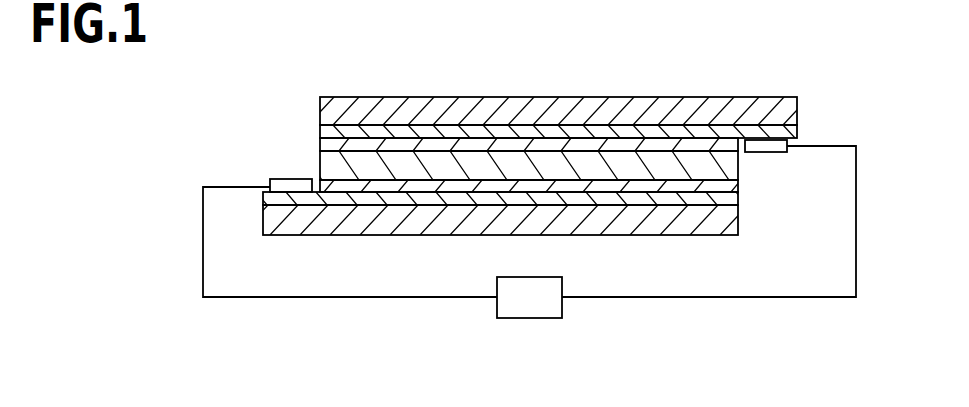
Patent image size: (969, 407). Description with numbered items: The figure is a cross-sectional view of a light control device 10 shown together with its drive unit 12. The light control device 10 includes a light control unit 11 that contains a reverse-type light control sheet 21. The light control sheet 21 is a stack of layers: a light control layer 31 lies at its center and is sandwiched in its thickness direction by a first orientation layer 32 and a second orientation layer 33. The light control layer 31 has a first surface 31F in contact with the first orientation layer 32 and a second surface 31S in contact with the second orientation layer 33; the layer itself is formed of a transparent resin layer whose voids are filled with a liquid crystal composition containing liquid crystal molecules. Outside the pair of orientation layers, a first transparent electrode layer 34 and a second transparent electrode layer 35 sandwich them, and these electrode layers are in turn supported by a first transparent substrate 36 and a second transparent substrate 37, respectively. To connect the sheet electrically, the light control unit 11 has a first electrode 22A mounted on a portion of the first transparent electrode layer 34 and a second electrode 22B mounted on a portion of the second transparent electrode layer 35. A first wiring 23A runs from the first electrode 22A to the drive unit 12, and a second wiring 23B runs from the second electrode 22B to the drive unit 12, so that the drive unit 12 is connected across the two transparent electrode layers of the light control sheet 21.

The light control device 10 is at (826, 85).
The light control unit 11 is at (190, 253).
The drive unit 12 is at (563, 303).
The light control sheet 21 is at (192, 97).
The first electrode 22A is at (293, 180).
The second electrode 22B is at (773, 153).
The first wiring 23A is at (351, 298).
The second wiring 23B is at (729, 298).
The light control layer 31 is at (739, 168).
The second surface 31S is at (672, 166).
The first surface 31F is at (411, 172).
The first orientation layer 32 is at (739, 190).
The second orientation layer 33 is at (320, 143).
The first transparent electrode layer 34 is at (263, 197).
The second transparent electrode layer 35 is at (798, 130).
The first transparent substrate 36 is at (533, 236).
The second transparent substrate 37 is at (530, 96).